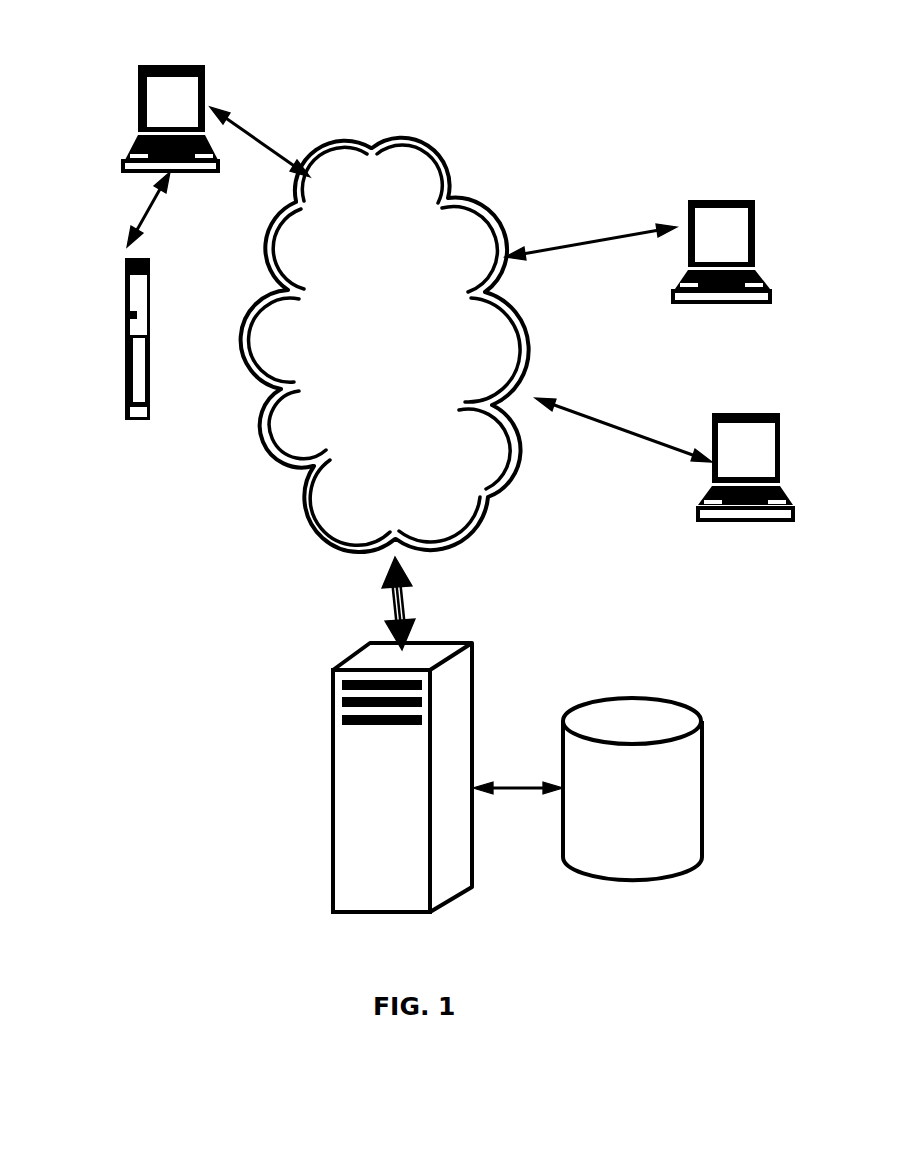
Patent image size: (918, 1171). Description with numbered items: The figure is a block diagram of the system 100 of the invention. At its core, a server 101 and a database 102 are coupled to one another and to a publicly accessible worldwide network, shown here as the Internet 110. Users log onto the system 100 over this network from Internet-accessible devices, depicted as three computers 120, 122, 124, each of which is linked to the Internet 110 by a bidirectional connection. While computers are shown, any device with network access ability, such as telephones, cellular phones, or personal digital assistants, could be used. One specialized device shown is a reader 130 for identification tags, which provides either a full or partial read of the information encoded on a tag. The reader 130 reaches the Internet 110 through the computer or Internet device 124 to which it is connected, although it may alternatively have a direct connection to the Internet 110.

The system 100 is at (570, 928).
The server 101 is at (347, 822).
The database 102 is at (688, 778).
The Internet 110 is at (395, 353).
The computer 120 is at (713, 480).
The computer 122 is at (720, 235).
The computer 124 is at (183, 102).
The reader 130 is at (138, 305).